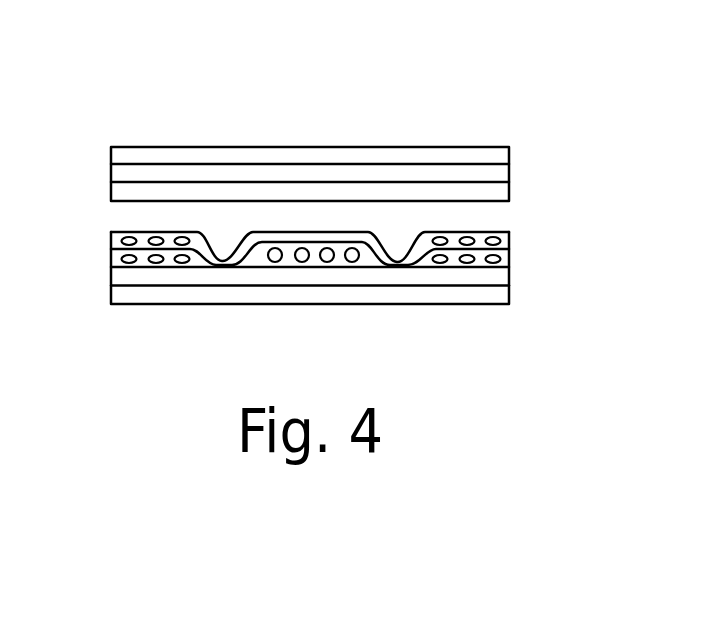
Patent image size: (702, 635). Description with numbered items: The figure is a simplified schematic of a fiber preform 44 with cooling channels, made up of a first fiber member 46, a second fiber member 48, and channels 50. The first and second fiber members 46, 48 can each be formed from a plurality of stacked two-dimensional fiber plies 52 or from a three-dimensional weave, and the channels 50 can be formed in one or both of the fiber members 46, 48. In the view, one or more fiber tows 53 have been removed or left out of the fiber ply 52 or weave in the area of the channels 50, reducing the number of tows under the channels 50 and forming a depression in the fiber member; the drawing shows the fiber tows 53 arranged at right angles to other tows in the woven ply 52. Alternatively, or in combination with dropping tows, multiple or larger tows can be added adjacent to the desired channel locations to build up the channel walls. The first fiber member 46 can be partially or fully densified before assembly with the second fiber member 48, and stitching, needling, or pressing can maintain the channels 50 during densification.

The fiber preform 44 is at (523, 80).
The first fiber member 46 is at (468, 304).
The second fiber member 48 is at (277, 147).
The channels 50 is at (403, 250).
The 2D fiber plies 52 is at (168, 283).
The fiber tows 53 is at (128, 263).